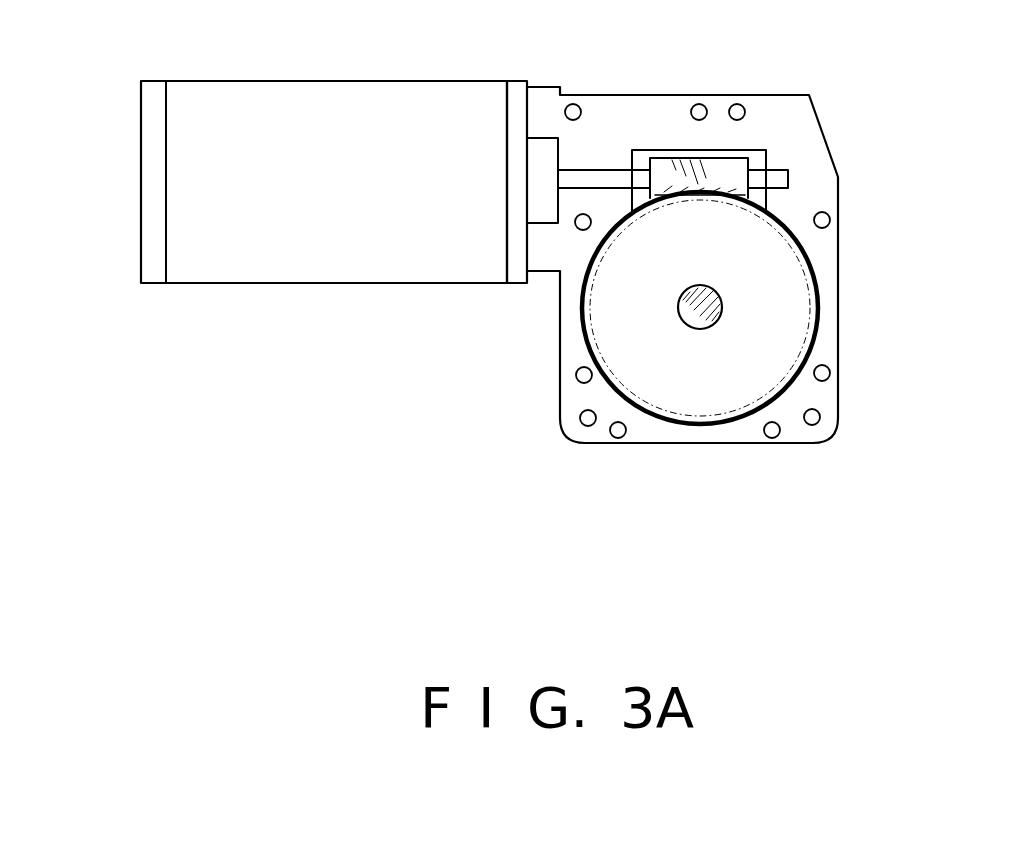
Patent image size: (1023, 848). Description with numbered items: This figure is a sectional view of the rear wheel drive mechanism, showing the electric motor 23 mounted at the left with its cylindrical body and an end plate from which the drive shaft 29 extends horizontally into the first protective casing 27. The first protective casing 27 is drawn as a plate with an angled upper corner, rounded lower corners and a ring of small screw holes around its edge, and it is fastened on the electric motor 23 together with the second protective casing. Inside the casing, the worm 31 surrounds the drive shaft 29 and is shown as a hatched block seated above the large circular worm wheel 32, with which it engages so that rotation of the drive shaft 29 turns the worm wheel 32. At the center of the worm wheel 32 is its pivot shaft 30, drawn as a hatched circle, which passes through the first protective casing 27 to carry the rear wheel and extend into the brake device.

The electric motor 23 is at (325, 265).
The first protective casing 27 is at (808, 136).
The drive shaft 29 is at (610, 183).
The pivot shaft 30 is at (703, 305).
The worm 31 is at (705, 168).
The worm wheel 32 is at (793, 298).